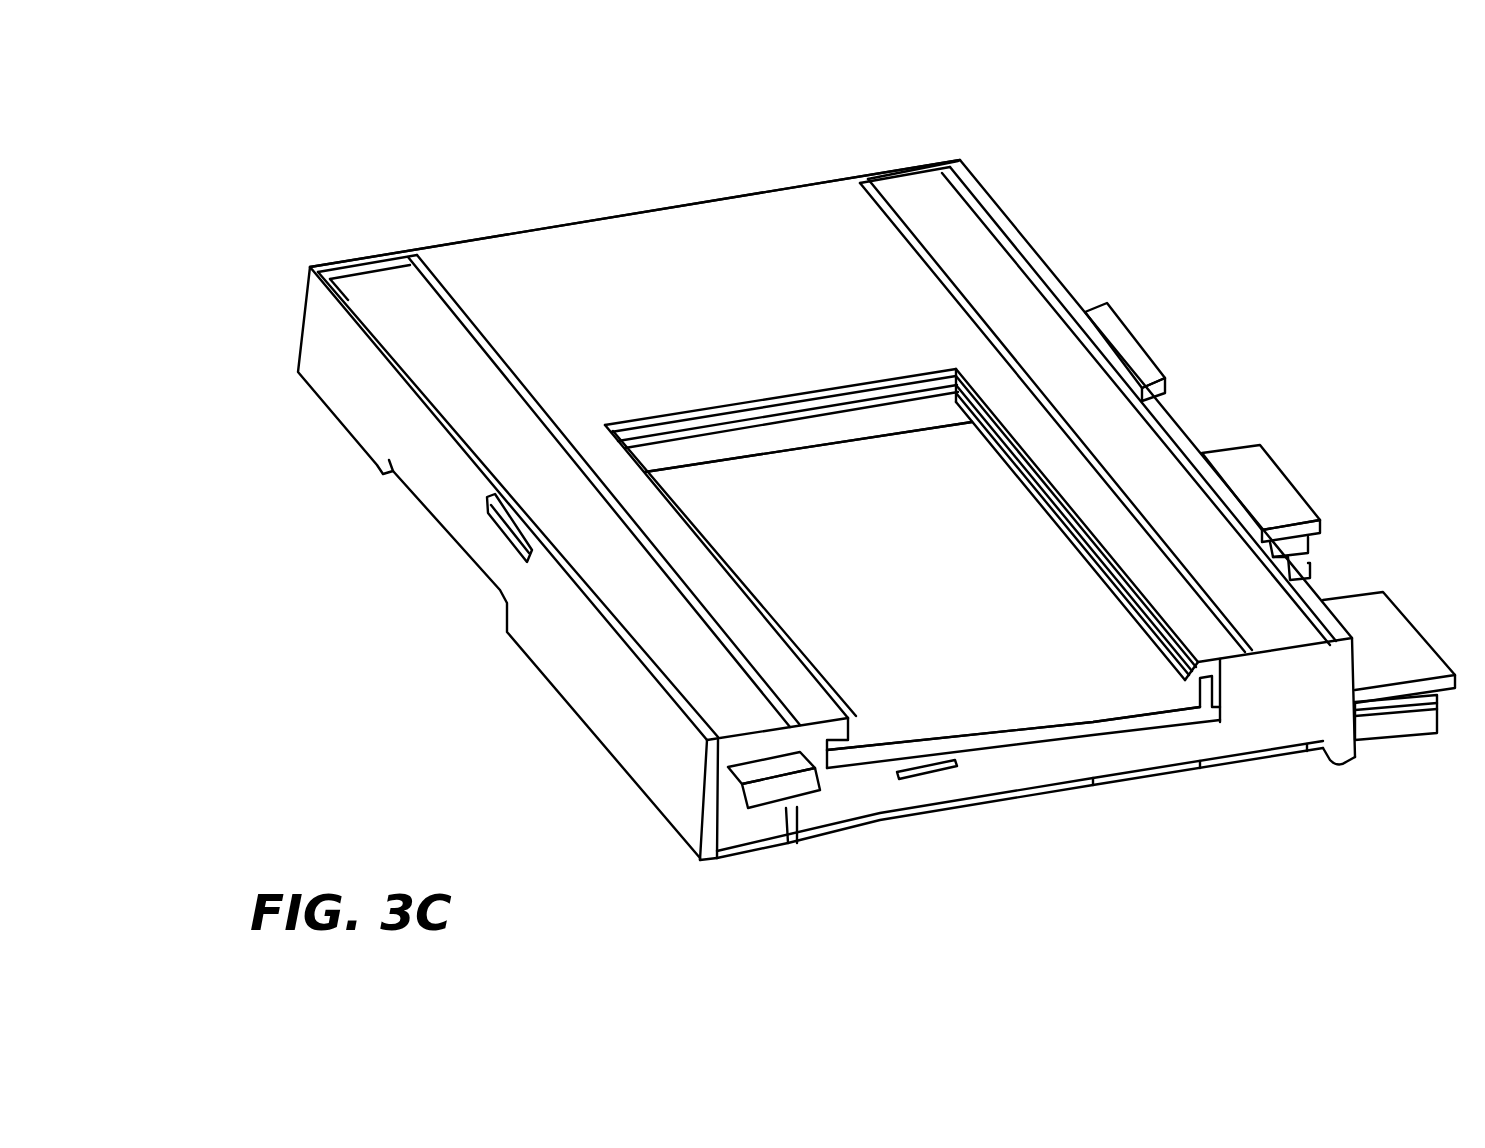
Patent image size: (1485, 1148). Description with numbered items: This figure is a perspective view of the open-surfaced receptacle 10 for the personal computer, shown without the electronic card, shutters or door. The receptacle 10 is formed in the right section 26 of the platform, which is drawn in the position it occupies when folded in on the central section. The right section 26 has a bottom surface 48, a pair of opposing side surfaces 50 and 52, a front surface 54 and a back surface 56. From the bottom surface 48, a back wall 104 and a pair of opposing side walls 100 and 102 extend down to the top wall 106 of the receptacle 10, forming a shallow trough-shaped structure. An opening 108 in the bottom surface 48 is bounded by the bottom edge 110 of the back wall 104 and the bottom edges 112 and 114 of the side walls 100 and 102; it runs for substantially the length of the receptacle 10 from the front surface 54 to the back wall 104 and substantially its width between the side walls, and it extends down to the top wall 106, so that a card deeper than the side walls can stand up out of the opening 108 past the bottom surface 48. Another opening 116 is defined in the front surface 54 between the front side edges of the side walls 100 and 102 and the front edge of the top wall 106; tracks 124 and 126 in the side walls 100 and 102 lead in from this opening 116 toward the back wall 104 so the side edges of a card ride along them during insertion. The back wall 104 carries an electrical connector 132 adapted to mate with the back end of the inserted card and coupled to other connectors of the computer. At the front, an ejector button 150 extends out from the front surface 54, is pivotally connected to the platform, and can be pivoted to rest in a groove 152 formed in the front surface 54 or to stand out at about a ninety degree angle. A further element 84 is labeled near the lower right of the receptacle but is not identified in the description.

The open-surfaced receptacle 10 is at (729, 360).
The right section 26 is at (1288, 296).
The bottom surface 48 is at (690, 235).
The side surface 50 is at (592, 698).
The side surface 52 is at (1015, 224).
The front surface 54 is at (1165, 748).
The back surface 56 is at (588, 222).
The latch hook 84 is at (1342, 757).
The side wall 100 is at (1075, 555).
The side wall 102 is at (747, 597).
The back wall 104 is at (852, 427).
The top wall 106 is at (968, 619).
The opening 108 is at (924, 460).
The bottom edge 110 is at (658, 413).
The bottom edge 112 is at (672, 507).
The bottom edge 114 is at (1018, 440).
The opening 116 is at (1019, 668).
The track 124 is at (1186, 694).
The track 126 is at (858, 740).
The electrical connector 132 is at (770, 437).
The ejector button 150 is at (808, 790).
The groove 152 is at (745, 827).